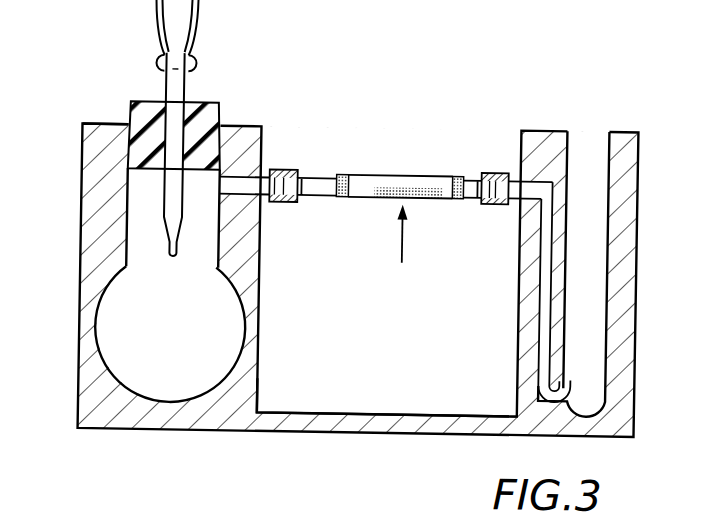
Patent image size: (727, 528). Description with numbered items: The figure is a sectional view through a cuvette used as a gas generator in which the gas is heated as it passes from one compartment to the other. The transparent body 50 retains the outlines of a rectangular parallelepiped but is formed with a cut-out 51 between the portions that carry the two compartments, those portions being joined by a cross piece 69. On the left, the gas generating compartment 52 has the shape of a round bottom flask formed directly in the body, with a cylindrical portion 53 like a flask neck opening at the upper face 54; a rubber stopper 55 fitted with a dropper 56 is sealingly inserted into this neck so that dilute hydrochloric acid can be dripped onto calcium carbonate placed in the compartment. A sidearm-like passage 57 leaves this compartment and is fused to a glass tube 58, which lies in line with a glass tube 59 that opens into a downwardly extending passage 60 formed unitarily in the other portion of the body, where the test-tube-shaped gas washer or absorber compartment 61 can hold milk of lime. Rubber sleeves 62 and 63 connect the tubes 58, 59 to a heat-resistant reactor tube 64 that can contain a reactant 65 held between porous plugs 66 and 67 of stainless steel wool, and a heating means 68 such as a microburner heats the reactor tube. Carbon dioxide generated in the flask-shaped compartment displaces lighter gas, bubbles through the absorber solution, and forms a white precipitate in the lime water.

The transparent body 50 is at (92, 405).
The cut-out 51 is at (273, 409).
The gas generating compartment 52 is at (104, 313).
The cylindrical portion 53 is at (125, 226).
The upper face 54 is at (92, 131).
The rubber stopper 55 is at (214, 118).
The dropper 56 is at (163, 94).
The passage 57 is at (241, 193).
The glass tube 58 is at (266, 175).
The glass tube 59 is at (510, 203).
The downwardly extending passage 60 is at (542, 323).
The gas washer or absorber compartment 61 is at (609, 240).
The rubber sleeve 62 is at (291, 175).
The rubber sleeve 63 is at (496, 172).
The reactor tube 64 is at (401, 177).
The reactant 65 is at (427, 198).
The porous plug 66 is at (340, 180).
The porous plug 67 is at (456, 182).
The heating means 68 is at (398, 236).
The cross piece 69 is at (335, 408).